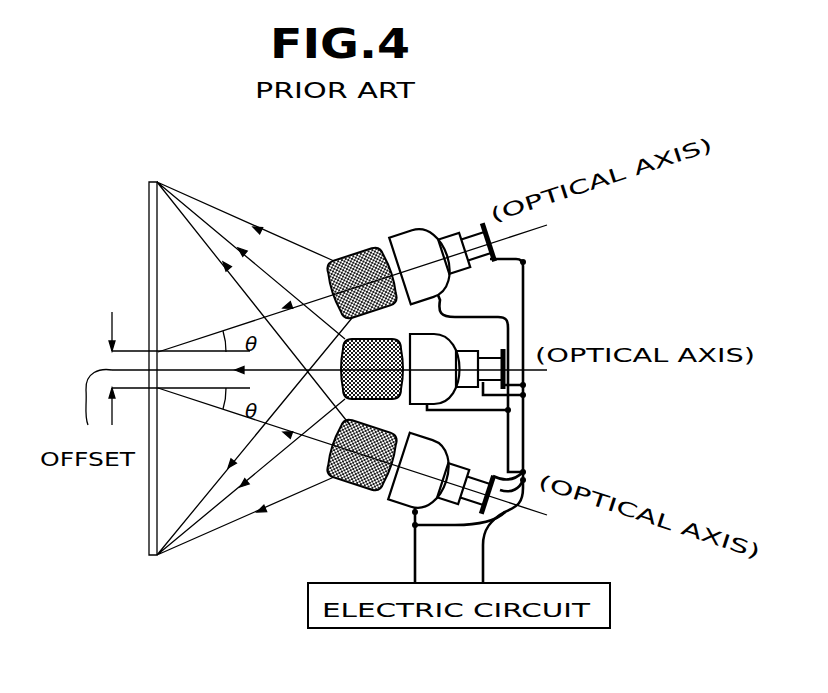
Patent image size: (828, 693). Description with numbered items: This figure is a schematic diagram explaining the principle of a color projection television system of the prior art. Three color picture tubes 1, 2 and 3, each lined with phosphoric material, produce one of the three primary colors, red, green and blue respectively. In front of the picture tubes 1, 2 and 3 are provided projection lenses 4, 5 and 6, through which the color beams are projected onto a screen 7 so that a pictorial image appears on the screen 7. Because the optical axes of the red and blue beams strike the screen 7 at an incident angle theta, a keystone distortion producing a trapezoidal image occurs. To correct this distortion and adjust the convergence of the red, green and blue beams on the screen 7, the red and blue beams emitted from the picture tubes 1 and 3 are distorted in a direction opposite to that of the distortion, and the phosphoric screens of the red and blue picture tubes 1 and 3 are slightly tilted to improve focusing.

The color picture tube 1 is at (401, 238).
The color picture tube 2 is at (425, 405).
The color picture tube 3 is at (397, 497).
The projection lens 4 is at (355, 252).
The projection lens 5 is at (372, 400).
The projection lens 6 is at (350, 480).
The screen 7 is at (149, 210).